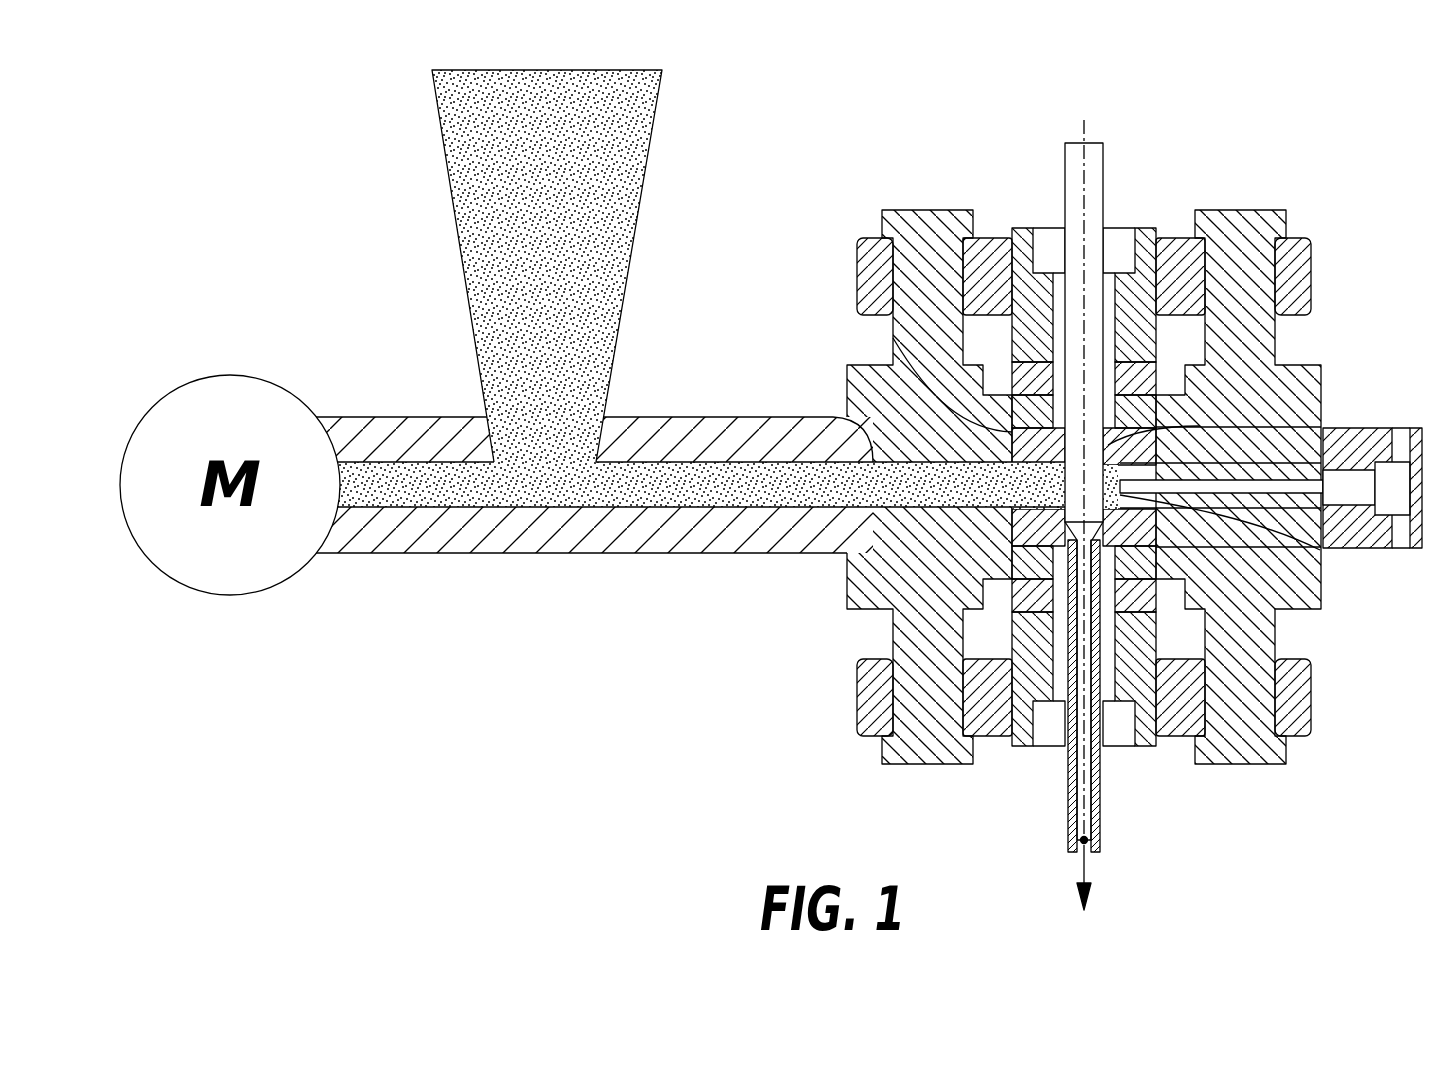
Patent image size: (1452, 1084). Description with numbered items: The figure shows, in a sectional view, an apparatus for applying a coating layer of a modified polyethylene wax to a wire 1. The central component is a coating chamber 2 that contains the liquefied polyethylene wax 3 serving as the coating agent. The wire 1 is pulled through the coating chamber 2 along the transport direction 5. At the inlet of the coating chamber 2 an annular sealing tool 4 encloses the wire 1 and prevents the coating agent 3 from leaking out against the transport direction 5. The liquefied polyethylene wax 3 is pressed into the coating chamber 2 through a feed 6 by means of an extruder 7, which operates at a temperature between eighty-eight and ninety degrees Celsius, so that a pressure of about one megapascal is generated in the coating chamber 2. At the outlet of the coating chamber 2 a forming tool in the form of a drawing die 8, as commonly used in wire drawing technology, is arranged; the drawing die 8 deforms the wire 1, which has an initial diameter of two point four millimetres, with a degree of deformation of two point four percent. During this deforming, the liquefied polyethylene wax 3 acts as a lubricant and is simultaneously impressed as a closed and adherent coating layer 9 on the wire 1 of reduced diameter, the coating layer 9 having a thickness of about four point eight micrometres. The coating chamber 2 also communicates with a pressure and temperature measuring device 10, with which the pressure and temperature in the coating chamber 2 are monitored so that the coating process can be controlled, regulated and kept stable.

The wire 1 is at (1103, 165).
The coating chamber 2 is at (1323, 424).
The liquefied polyethylene wax 3 is at (1322, 553).
The annular sealing tool 4 is at (891, 334).
The transport direction 5 is at (1086, 866).
The feed 6 is at (843, 407).
The extruder 7 is at (507, 556).
The drawing die 8 is at (1288, 628).
The coating layer 9 is at (1068, 802).
The pressure and temperature measuring device 10 is at (1375, 428).